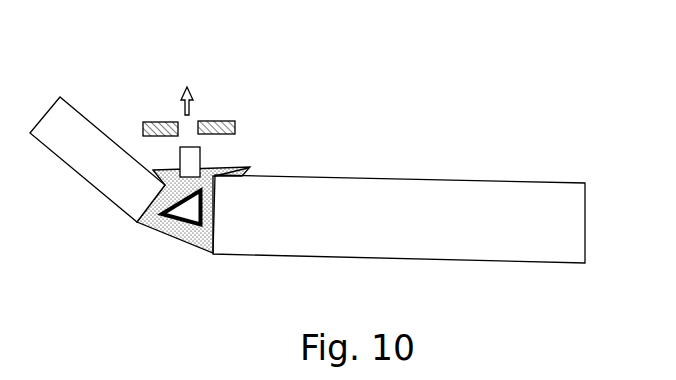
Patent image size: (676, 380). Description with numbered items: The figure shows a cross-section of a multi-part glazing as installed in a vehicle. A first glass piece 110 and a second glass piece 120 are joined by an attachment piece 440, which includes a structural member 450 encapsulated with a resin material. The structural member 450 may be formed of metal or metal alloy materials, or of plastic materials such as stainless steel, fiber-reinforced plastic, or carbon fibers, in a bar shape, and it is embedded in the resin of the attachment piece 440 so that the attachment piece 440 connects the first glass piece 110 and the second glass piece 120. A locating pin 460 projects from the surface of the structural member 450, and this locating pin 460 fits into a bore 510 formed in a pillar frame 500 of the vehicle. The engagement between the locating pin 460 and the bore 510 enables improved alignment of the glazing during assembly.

The first glass piece 110 is at (400, 220).
The second glass piece 120 is at (98, 160).
The attachment piece 440 is at (167, 234).
The structural member 450 is at (207, 220).
The locating pin 460 is at (200, 150).
The pillar frame 500 is at (160, 120).
The bore 510 is at (192, 120).